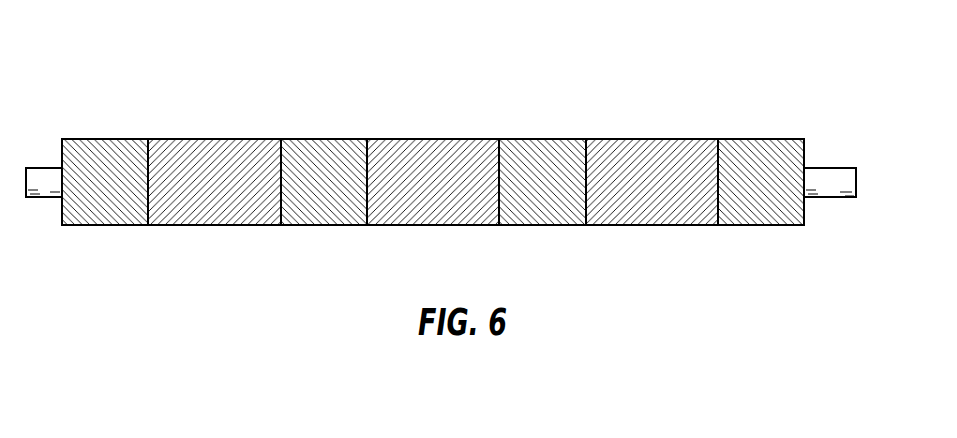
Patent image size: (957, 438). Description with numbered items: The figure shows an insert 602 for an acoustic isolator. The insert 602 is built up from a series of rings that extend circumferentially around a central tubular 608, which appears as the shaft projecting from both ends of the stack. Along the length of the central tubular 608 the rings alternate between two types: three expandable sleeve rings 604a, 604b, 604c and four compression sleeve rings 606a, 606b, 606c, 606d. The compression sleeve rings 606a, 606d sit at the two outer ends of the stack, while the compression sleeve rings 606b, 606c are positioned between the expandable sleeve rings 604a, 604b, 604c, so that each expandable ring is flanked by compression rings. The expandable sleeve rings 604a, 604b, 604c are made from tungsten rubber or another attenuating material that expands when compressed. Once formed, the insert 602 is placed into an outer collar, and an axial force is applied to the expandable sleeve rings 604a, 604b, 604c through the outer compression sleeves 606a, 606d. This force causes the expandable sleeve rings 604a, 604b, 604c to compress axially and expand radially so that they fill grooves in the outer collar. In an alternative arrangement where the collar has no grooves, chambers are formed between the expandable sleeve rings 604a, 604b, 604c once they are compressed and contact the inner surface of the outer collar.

The insert 602 is at (167, 47).
The expandable sleeve ring 604a is at (215, 137).
The expandable sleeve ring 604b is at (435, 137).
The expandable sleeve ring 604c is at (653, 137).
The compression sleeve ring 606a is at (107, 227).
The compression sleeve ring 606b is at (325, 227).
The compression sleeve ring 606c is at (542, 227).
The compression sleeve ring 606d is at (760, 227).
The central tubular 608 is at (832, 163).